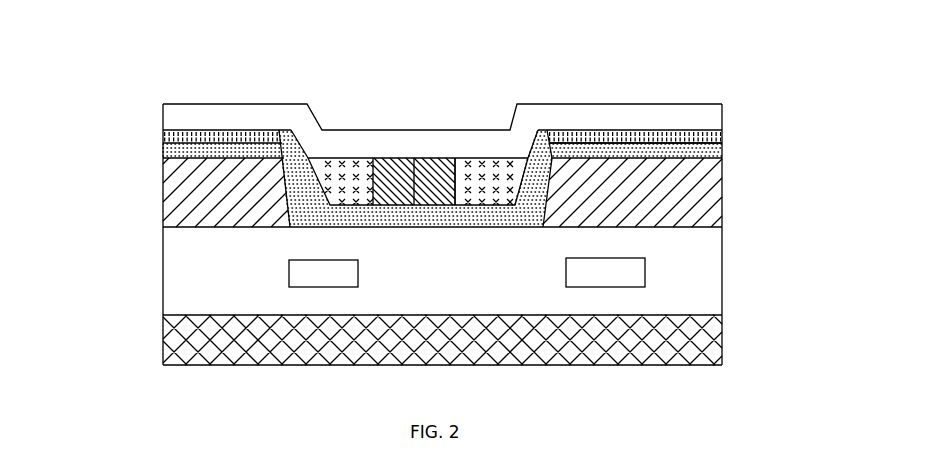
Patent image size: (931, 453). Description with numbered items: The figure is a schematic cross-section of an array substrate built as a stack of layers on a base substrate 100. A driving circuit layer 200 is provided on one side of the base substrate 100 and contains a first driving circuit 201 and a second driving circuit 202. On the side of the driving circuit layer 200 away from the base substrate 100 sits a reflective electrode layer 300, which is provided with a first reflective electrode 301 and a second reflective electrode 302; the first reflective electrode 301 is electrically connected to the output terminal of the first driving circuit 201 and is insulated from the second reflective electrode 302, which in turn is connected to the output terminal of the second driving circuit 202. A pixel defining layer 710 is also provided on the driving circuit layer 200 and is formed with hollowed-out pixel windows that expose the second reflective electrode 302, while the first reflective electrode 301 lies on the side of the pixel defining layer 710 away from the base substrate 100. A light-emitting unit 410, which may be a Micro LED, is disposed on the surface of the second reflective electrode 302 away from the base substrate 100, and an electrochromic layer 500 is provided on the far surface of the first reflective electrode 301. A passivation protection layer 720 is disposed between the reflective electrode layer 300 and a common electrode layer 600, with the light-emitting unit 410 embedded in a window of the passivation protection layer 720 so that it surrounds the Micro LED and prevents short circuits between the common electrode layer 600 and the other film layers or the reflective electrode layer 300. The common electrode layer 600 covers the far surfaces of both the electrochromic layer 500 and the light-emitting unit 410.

The base substrate 100 is at (163, 343).
The driving circuit layer 200 is at (163, 287).
The first driving circuit 201 is at (289, 275).
The second driving circuit 202 is at (620, 269).
The reflective electrode layer 300 is at (163, 150).
The first reflective electrode 301 is at (703, 152).
The second reflective electrode 302 is at (410, 166).
The light-emitting unit 410 is at (447, 166).
The electrochromic layer 500 is at (163, 137).
The common electrode layer 600 is at (163, 110).
The pixel defining layer 710 is at (163, 205).
The passivation protection layer 720 is at (343, 167).